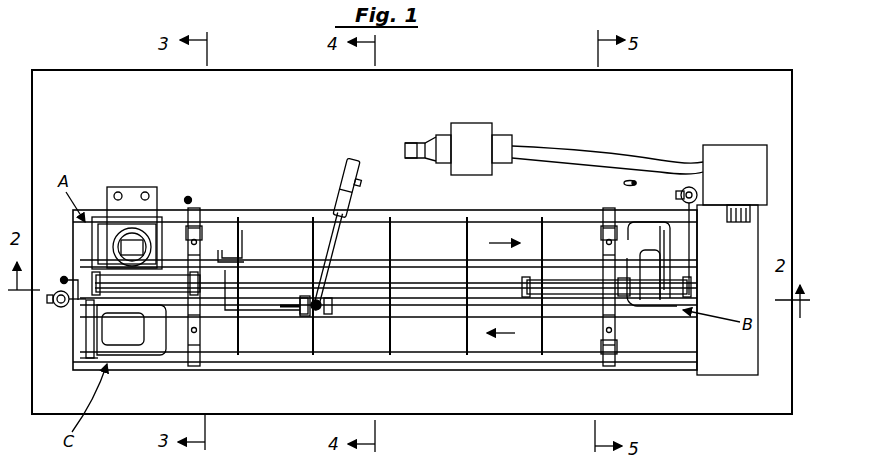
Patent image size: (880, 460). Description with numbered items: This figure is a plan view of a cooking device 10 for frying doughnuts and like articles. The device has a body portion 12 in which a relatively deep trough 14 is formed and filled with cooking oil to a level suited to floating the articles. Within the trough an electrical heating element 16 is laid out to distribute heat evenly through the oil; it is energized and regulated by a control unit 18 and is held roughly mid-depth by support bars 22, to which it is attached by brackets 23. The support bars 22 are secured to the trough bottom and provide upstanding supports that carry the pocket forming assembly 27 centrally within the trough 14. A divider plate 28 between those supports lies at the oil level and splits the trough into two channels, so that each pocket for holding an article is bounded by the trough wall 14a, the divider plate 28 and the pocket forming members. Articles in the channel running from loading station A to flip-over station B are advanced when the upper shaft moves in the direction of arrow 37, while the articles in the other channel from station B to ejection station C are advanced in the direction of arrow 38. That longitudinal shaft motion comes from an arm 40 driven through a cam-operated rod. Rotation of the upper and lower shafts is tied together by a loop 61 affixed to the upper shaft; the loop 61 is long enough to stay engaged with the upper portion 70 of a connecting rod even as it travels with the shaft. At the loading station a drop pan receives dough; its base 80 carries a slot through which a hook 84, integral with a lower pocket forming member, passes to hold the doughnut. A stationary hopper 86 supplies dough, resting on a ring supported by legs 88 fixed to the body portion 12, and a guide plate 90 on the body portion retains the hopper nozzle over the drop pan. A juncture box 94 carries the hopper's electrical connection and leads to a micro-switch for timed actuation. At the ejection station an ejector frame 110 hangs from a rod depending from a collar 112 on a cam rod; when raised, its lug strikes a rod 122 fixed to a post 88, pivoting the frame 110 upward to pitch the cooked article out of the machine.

The cooking device 10 is at (756, 70).
The body portion 12 is at (698, 85).
The trough 14 is at (455, 368).
The trough wall 14a is at (418, 210).
The heating element 16 is at (495, 362).
The control unit 18 is at (737, 372).
The support bars 22 is at (195, 212).
The brackets 23 is at (203, 225).
The pocket forming assembly 27 is at (258, 240).
The divider plate 28 is at (430, 300).
The arrow 37 is at (500, 228).
The arrow 38 is at (510, 362).
The arm 40 is at (349, 180).
The loop 61 is at (264, 310).
The upper portion of connecting rod 70 is at (305, 306).
The drop pan base 80 is at (629, 178).
The hook 84 is at (222, 255).
The hopper 86 is at (680, 241).
The legs 88 is at (186, 197).
The guide plate 90 is at (120, 187).
The juncture box 94 is at (478, 123).
The ejector frame 110 is at (86, 348).
The collar 112 is at (60, 307).
The rod 122 is at (73, 276).